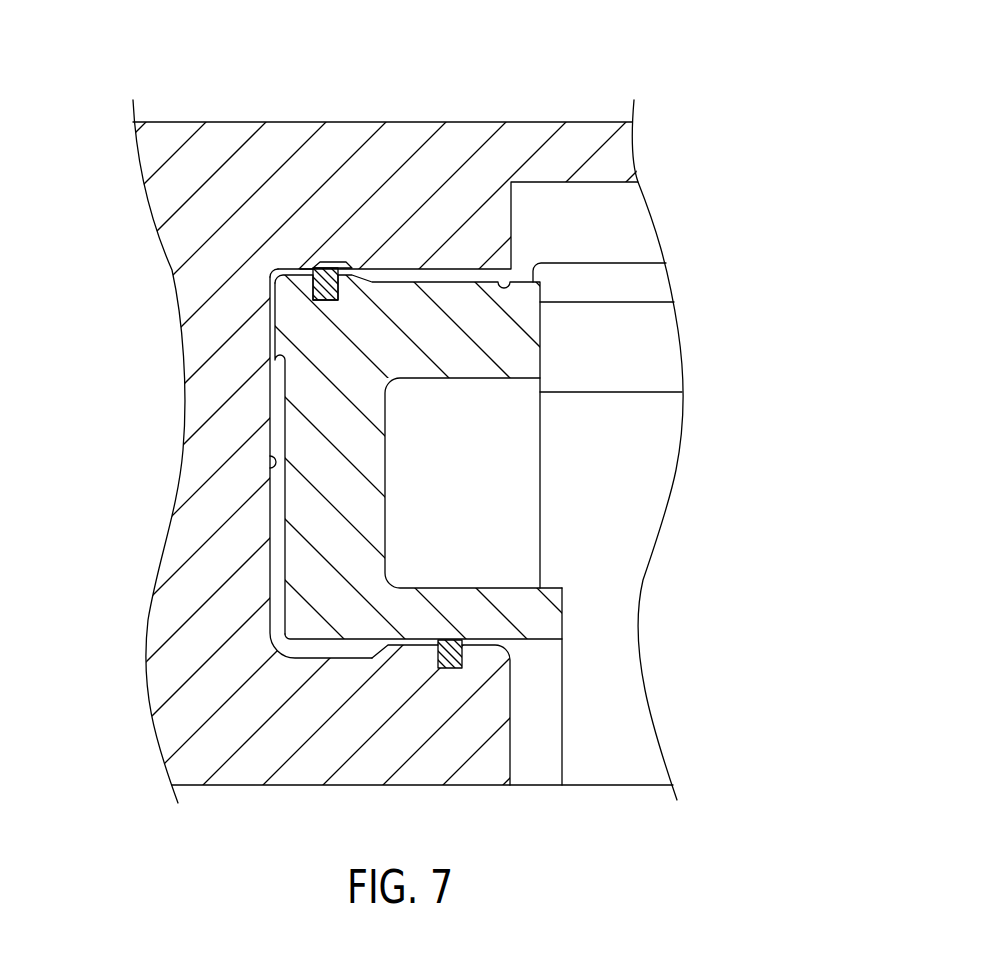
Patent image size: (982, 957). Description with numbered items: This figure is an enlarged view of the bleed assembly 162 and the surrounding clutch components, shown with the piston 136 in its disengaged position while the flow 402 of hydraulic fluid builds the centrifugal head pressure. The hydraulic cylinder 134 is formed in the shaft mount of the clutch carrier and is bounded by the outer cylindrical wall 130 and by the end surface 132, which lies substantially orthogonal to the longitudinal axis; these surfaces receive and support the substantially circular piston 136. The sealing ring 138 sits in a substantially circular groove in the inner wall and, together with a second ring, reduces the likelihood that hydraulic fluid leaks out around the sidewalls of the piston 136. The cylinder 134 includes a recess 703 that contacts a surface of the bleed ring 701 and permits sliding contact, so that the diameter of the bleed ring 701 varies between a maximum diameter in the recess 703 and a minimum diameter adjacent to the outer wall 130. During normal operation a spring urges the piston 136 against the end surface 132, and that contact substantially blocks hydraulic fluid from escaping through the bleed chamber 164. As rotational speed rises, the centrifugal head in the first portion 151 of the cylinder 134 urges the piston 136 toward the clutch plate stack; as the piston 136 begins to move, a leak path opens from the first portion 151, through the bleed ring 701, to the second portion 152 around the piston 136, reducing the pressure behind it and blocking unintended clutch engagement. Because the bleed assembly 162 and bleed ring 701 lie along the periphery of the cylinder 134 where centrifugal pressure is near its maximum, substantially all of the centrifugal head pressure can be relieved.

The outer cylindrical wall 130 is at (436, 270).
The end surface 132 is at (272, 465).
The hydraulic cylinder 134 is at (218, 552).
The piston 136 is at (300, 445).
The sealing ring 138 is at (437, 650).
The first portion 151 is at (276, 389).
The second portion 152 is at (460, 277).
The bleed assembly 162 is at (333, 249).
The bleed chamber 164 is at (270, 272).
The flow of hydraulic fluid 402 is at (323, 262).
The bleed ring 701 is at (313, 267).
The recess 703 is at (340, 265).